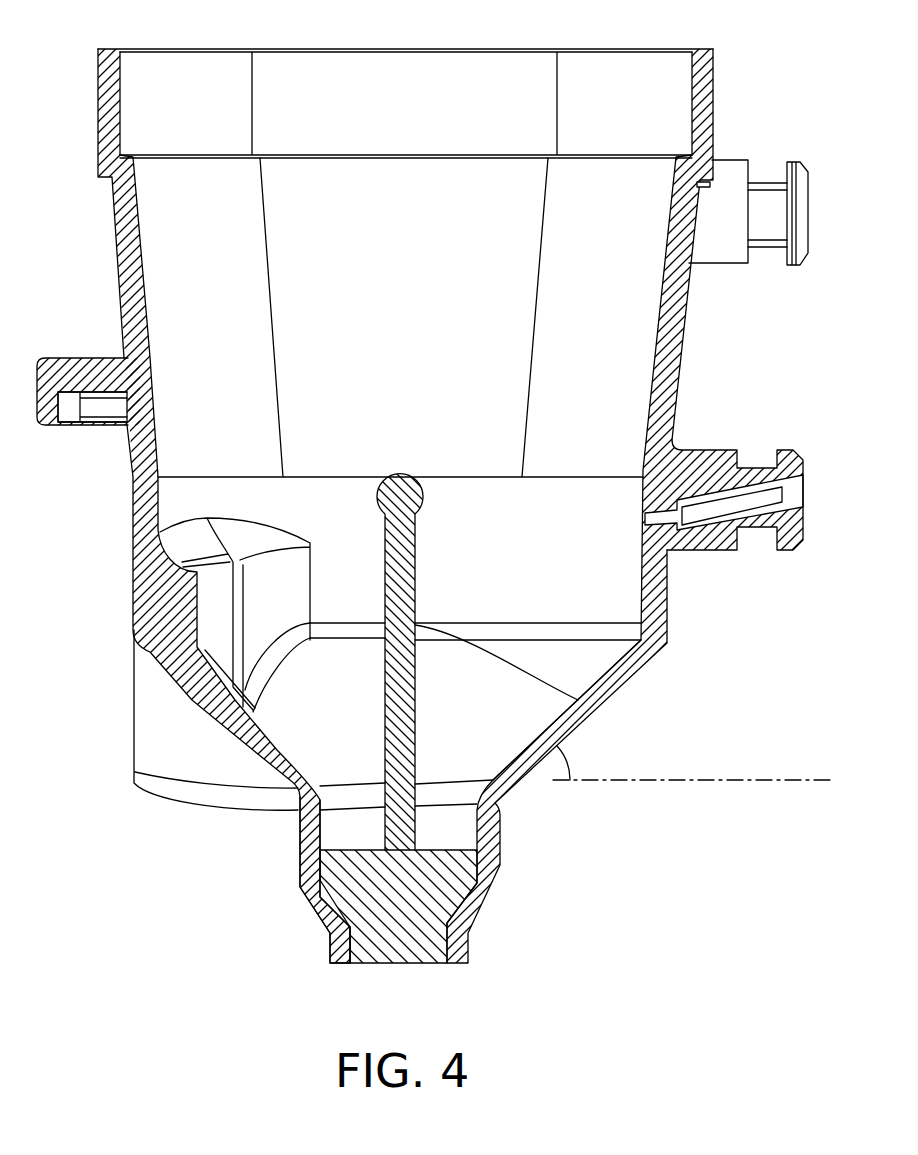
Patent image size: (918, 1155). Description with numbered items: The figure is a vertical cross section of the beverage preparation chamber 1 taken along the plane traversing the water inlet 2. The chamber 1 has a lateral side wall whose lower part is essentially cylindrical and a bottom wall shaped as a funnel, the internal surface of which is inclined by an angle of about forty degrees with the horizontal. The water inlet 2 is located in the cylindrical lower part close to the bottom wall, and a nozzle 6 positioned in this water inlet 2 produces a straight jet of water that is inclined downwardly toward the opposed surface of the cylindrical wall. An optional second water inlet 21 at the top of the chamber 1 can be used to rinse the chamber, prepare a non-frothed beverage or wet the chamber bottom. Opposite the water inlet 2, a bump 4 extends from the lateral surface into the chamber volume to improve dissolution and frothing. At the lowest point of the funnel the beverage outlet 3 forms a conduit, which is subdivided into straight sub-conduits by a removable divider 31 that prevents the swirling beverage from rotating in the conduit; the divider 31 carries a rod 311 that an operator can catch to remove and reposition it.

The chamber 1 is at (434, 490).
The water inlet 2 is at (658, 559).
The second water inlet 21 is at (806, 152).
The beverage outlet 3 is at (308, 855).
The divider 31 is at (482, 878).
The rod 311 is at (582, 702).
The bump 4 is at (210, 604).
The nozzle 6 is at (750, 497).